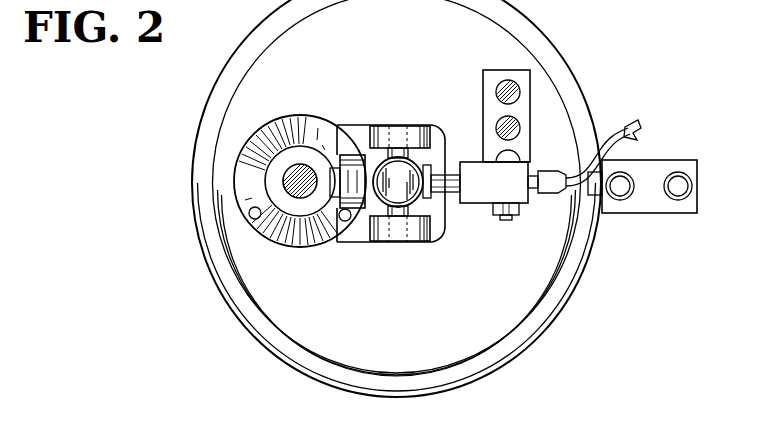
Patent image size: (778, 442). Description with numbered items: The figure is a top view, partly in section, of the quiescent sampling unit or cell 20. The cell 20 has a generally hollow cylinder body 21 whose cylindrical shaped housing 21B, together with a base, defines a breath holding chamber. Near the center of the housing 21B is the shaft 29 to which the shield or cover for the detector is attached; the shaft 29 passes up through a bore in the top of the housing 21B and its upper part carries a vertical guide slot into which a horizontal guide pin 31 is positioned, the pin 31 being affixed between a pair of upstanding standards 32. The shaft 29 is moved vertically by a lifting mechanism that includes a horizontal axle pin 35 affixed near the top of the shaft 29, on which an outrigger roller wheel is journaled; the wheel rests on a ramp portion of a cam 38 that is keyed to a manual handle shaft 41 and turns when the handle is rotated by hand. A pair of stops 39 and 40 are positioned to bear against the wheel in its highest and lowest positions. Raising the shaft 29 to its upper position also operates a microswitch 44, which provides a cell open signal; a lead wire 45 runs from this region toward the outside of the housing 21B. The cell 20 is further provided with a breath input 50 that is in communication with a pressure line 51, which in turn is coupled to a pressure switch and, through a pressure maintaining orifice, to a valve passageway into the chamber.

The quiescent sampling unit or cell 20 is at (531, 345).
The hollow cylinder body 21 is at (470, 381).
The cylindrical shaped housing 21B is at (510, 278).
The shaft 29 is at (398, 181).
The horizontal guide pin 31 is at (402, 238).
The upstanding standards 32 is at (414, 126).
The horizontal axle pin 35 is at (378, 222).
The cam 38 is at (290, 128).
The stop 39 is at (250, 216).
The stop 40 is at (349, 222).
The manual handle shaft 41 is at (288, 178).
The microswitch 44 is at (520, 195).
The lead wire 45 is at (529, 161).
The breath input 50 is at (679, 201).
The pressure line 51 is at (620, 201).